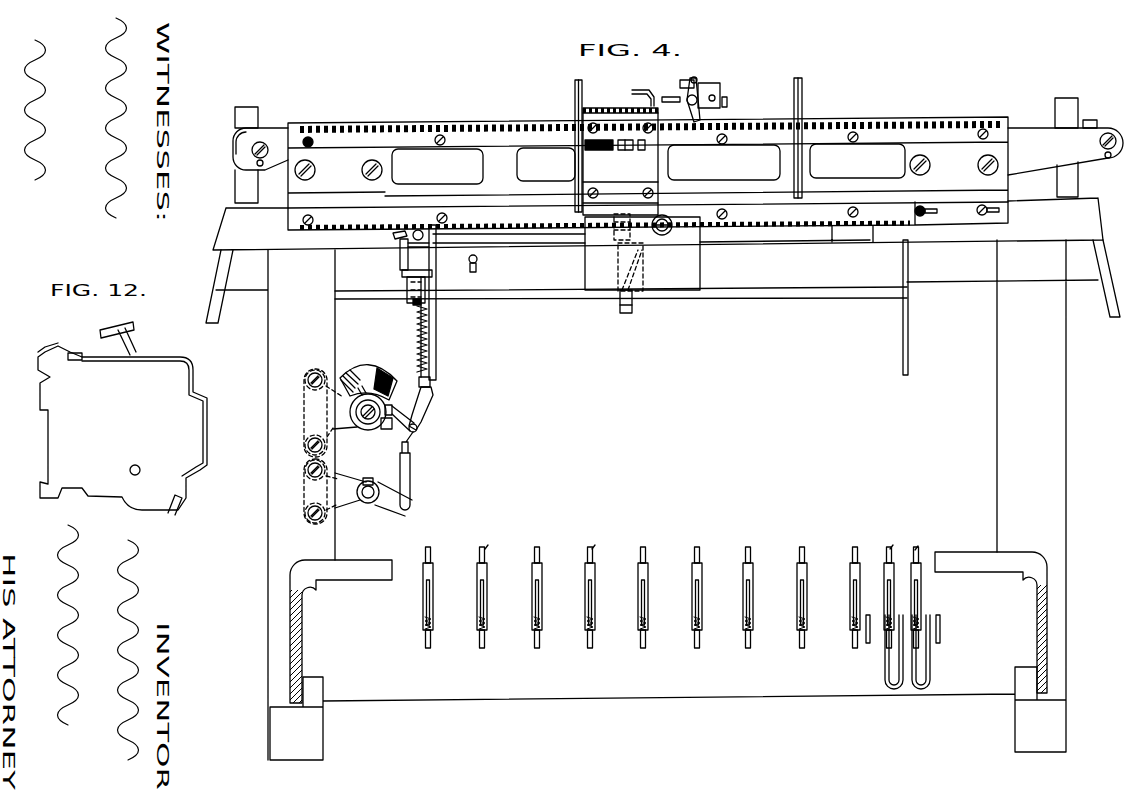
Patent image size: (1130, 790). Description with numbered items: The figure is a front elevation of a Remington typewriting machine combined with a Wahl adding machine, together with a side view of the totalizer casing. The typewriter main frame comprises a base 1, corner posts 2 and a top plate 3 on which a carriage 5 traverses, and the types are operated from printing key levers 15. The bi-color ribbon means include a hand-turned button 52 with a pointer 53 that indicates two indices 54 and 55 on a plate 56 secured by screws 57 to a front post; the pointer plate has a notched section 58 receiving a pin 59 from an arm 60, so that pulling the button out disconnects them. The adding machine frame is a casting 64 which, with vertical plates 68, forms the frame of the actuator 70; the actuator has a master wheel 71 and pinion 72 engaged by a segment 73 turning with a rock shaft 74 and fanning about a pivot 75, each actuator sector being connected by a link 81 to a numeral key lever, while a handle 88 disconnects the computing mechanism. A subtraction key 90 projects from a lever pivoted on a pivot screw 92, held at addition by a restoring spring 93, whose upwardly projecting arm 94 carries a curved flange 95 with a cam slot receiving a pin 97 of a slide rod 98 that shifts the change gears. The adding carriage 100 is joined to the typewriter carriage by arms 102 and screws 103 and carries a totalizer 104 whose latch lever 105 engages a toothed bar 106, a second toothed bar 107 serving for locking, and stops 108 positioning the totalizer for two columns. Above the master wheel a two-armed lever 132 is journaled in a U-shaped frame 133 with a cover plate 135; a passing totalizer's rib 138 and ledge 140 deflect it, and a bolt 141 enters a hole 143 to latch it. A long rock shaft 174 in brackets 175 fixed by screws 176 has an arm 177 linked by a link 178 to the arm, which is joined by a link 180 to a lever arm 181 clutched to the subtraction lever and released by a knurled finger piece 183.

In FIG. 4, the base 1 is at (298, 604).
In FIG. 4, the corner posts 2 is at (270, 364).
In FIG. 4, the top plate 3 is at (1093, 207).
In FIG. 4, the carriage 5 is at (243, 106).
In FIG. 4, the printing key levers 15 is at (427, 631).
In FIG. 4, the button 52 is at (358, 428).
In FIG. 4, the pointer 53 is at (379, 388).
In FIG. 4, the index 54 is at (386, 367).
In FIG. 4, the index 55 is at (349, 370).
In FIG. 4, the plate 56 is at (368, 366).
In FIG. 4, the screws 57 is at (313, 372).
In FIG. 4, the notched section 58 is at (392, 406).
In FIG. 4, the pin 59 is at (387, 430).
In FIG. 4, the arm 60 is at (399, 415).
In FIG. 4, the casting 64 is at (678, 113).
In FIG. 4, the vertical plates 68 is at (437, 318).
In FIG. 4, the actuator 70 is at (621, 277).
In FIG. 4, the master wheel 71 is at (673, 229).
In FIG. 4, the pinion 72 is at (613, 238).
In FIG. 4, the segment 73 is at (643, 240).
In FIG. 4, the rock shaft 74 is at (688, 298).
In FIG. 4, the pivot 75 is at (628, 313).
In FIG. 4, the link 81 is at (486, 550).
In FIG. 4, the handle 88 is at (461, 268).
In FIG. 4, the subtraction key 90 is at (407, 297).
In FIG. 4, the pivot screw 92 is at (417, 305).
In FIG. 4, the restoring spring 93 is at (422, 357).
In FIG. 4, the upwardly projecting arm 94 is at (436, 253).
In FIG. 4, the curved flange 95 is at (397, 240).
In FIG. 4, the pin 97 is at (417, 230).
In FIG. 4, the slide rod 98 is at (532, 244).
In FIG. 4, the carriage 100 is at (857, 161).
In FIG. 4, the arms 102 is at (263, 130).
In FIG. 4, the screws 103 is at (1100, 143).
In FIG. 4, the totalizer 104 is at (621, 161).
In FIG. 12, the totalizer 104 is at (122, 430).
In FIG. 4, the latch lever 105 is at (647, 87).
In FIG. 12, the latch lever 105 is at (135, 328).
In FIG. 4, the toothed bar 106 is at (483, 166).
In FIG. 4, the toothed bar 107 is at (495, 213).
In FIG. 4, the stops 108 is at (575, 97).
In FIG. 4, the two-armed lever 132 is at (699, 86).
In FIG. 4, the U-shaped frame 133 is at (727, 108).
In FIG. 4, the cover plate 135 is at (721, 87).
In FIG. 4, the rib 138 is at (608, 114).
In FIG. 12, the rib 138 is at (66, 350).
In FIG. 12, the ledge 140 is at (40, 352).
In FIG. 4, the bolt 141 is at (716, 98).
In FIG. 4, the hole 143 is at (693, 78).
In FIG. 4, the rock shaft 174 is at (357, 492).
In FIG. 4, the brackets 175 is at (343, 507).
In FIG. 4, the screws 176 is at (321, 491).
In FIG. 4, the arm 177 is at (386, 504).
In FIG. 4, the link 178 is at (410, 457).
In FIG. 4, the link 180 is at (431, 393).
In FIG. 4, the lever arm 181 is at (420, 288).
In FIG. 4, the knurled finger piece 183 is at (400, 255).